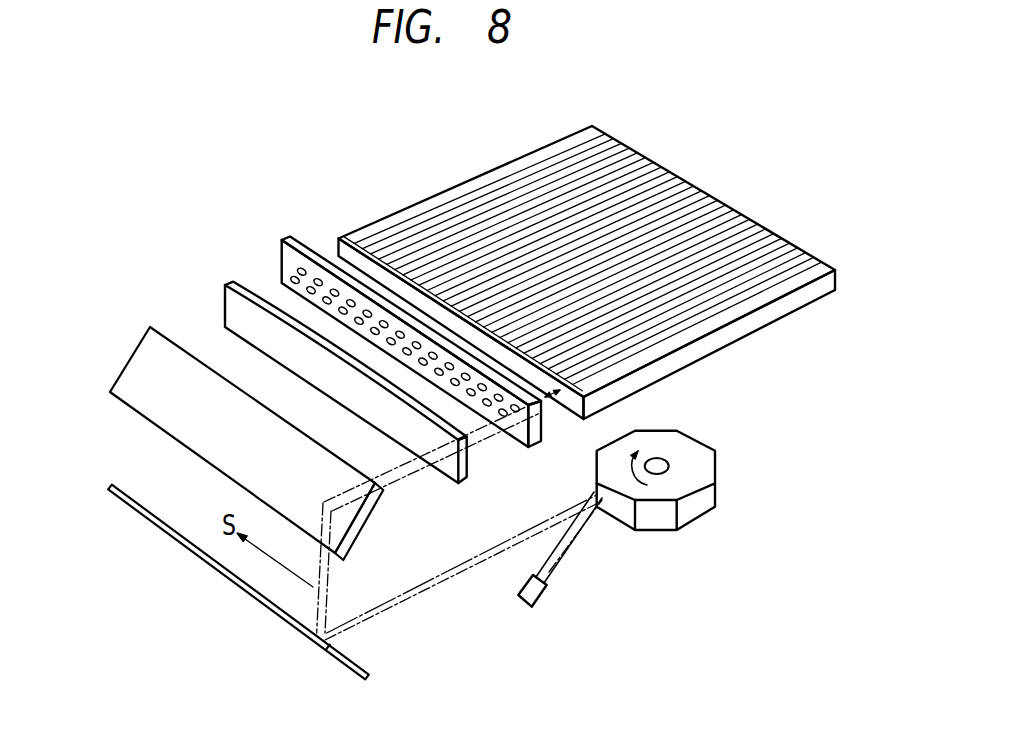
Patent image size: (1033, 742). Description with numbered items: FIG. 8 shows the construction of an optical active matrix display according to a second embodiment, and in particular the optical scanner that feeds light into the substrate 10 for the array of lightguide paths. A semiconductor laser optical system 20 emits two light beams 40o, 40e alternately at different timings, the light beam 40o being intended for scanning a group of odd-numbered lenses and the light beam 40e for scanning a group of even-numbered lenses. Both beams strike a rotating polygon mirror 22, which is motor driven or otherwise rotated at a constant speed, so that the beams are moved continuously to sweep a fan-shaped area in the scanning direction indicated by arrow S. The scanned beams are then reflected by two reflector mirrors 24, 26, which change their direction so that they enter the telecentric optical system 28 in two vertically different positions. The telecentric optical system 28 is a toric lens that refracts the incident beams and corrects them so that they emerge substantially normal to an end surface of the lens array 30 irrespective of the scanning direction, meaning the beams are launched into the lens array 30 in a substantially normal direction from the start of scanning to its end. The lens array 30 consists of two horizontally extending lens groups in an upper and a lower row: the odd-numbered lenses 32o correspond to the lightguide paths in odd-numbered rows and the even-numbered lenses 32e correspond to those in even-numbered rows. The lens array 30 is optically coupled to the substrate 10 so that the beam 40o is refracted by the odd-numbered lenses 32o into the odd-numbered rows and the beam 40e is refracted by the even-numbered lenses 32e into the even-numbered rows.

The substrate for the array of lightguide paths 10 is at (641, 142).
The semiconductor laser optical system 20 is at (540, 594).
The rotating polygon mirror 22 is at (708, 465).
The reflector mirror 24 is at (168, 533).
The reflector mirror 26 is at (141, 397).
The telecentric optical system 28 is at (232, 311).
The lens array 30 is at (312, 240).
The odd-numbered lenses 32o is at (298, 267).
The even-numbered lenses 32e is at (291, 280).
The light beam 40o is at (583, 537).
The light beam 40e is at (580, 562).